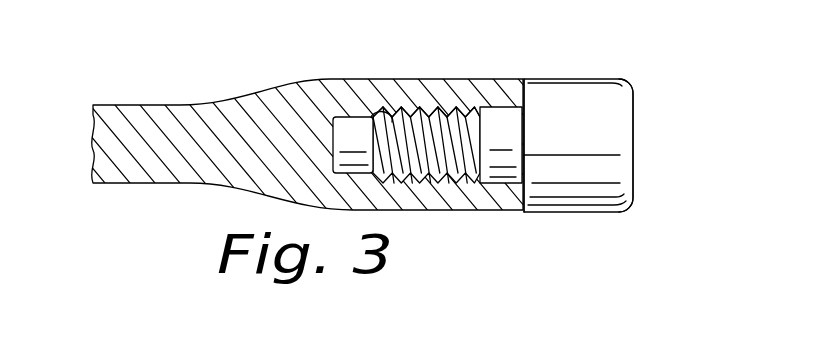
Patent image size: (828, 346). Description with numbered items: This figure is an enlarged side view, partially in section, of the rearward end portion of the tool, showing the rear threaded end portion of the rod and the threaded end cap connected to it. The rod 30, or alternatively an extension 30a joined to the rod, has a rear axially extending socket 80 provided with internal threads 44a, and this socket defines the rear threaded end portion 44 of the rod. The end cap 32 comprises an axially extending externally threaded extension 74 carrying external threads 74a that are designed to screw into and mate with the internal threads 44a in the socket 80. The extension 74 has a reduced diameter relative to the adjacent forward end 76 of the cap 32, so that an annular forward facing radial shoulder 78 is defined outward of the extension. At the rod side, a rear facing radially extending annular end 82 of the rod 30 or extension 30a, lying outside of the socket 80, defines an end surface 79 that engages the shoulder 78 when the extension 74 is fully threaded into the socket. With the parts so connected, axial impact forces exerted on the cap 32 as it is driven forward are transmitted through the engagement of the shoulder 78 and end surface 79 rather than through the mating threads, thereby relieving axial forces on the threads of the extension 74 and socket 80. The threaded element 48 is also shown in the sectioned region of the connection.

The rod 30 is at (323, 161).
The extension 30a is at (155, 185).
The rear threaded end portion 44 is at (408, 100).
The internal threads 44a is at (370, 118).
The threaded set screw 48 is at (432, 115).
The externally threaded extension 74 is at (500, 186).
The external threads 74a is at (443, 185).
The forward end 76 is at (599, 147).
The annular forward facing radial shoulder 78 is at (524, 97).
The end surface 79 is at (524, 100).
The rear axially extending socket 80 is at (527, 157).
The rear facing radially extending annular end 82 is at (528, 187).
The end cap 32 is at (640, 138).